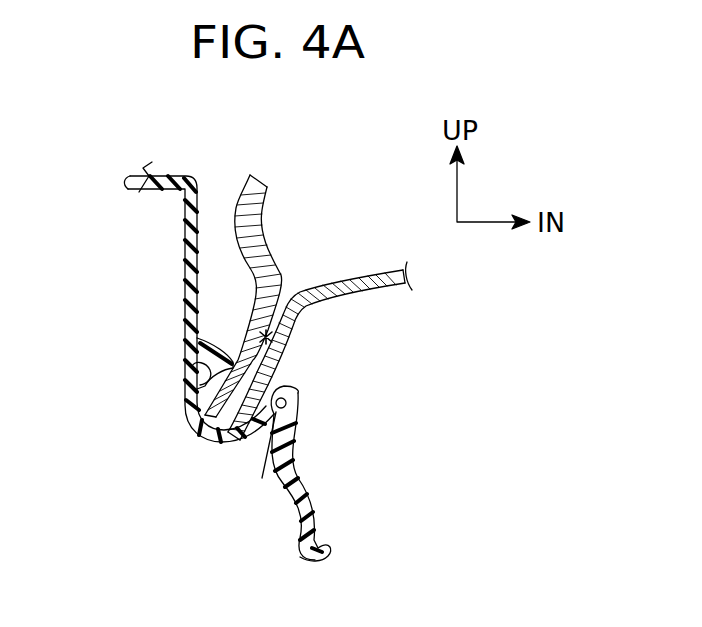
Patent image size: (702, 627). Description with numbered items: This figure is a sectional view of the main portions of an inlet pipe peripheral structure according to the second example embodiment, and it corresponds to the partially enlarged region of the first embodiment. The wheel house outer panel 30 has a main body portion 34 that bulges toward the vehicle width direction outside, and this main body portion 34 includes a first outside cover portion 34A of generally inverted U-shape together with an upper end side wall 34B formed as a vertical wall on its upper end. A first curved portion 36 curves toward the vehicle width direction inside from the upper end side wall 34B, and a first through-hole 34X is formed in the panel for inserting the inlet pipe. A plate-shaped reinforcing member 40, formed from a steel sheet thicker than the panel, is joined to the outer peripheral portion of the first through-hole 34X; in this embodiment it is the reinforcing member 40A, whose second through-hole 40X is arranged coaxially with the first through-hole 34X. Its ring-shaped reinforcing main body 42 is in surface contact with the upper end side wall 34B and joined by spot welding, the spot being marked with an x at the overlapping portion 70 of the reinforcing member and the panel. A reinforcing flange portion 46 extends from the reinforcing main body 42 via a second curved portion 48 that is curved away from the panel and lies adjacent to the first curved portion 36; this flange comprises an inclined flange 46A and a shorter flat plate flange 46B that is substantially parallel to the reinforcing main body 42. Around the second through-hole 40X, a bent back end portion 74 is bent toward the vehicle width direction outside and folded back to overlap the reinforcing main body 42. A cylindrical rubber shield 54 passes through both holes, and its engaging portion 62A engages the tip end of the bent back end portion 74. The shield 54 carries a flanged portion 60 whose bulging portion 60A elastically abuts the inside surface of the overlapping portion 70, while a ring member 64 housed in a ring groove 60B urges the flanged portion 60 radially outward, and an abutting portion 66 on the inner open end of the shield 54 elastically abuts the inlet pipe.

The wheel house outer panel 30 is at (321, 337).
The main body portion 34 is at (320, 351).
The first outside cover portion 34A is at (362, 277).
The upper end side wall 34B is at (297, 370).
The first through-hole 34X is at (226, 432).
The first curved portion 36 is at (298, 305).
The reinforcing member 40 is at (199, 302).
The reinforcing member 40A is at (223, 225).
The second through-hole 40X is at (222, 433).
The reinforcing main body 42 is at (253, 305).
The reinforcing flange portion 46 is at (284, 208).
The inclined flange 46A is at (272, 218).
The flat plate flange 46B is at (245, 188).
The second curved portion 48 is at (250, 272).
The shield 54 is at (181, 282).
The flanged portion 60 is at (302, 429).
The bulging portion 60A is at (300, 395).
The ring groove 60B is at (278, 413).
The engaging portion 62A is at (246, 347).
The ring member 64 is at (280, 410).
The abutting portion 66 is at (328, 562).
The overlapping portion 70 is at (286, 342).
The bent back end portion 74 is at (185, 370).